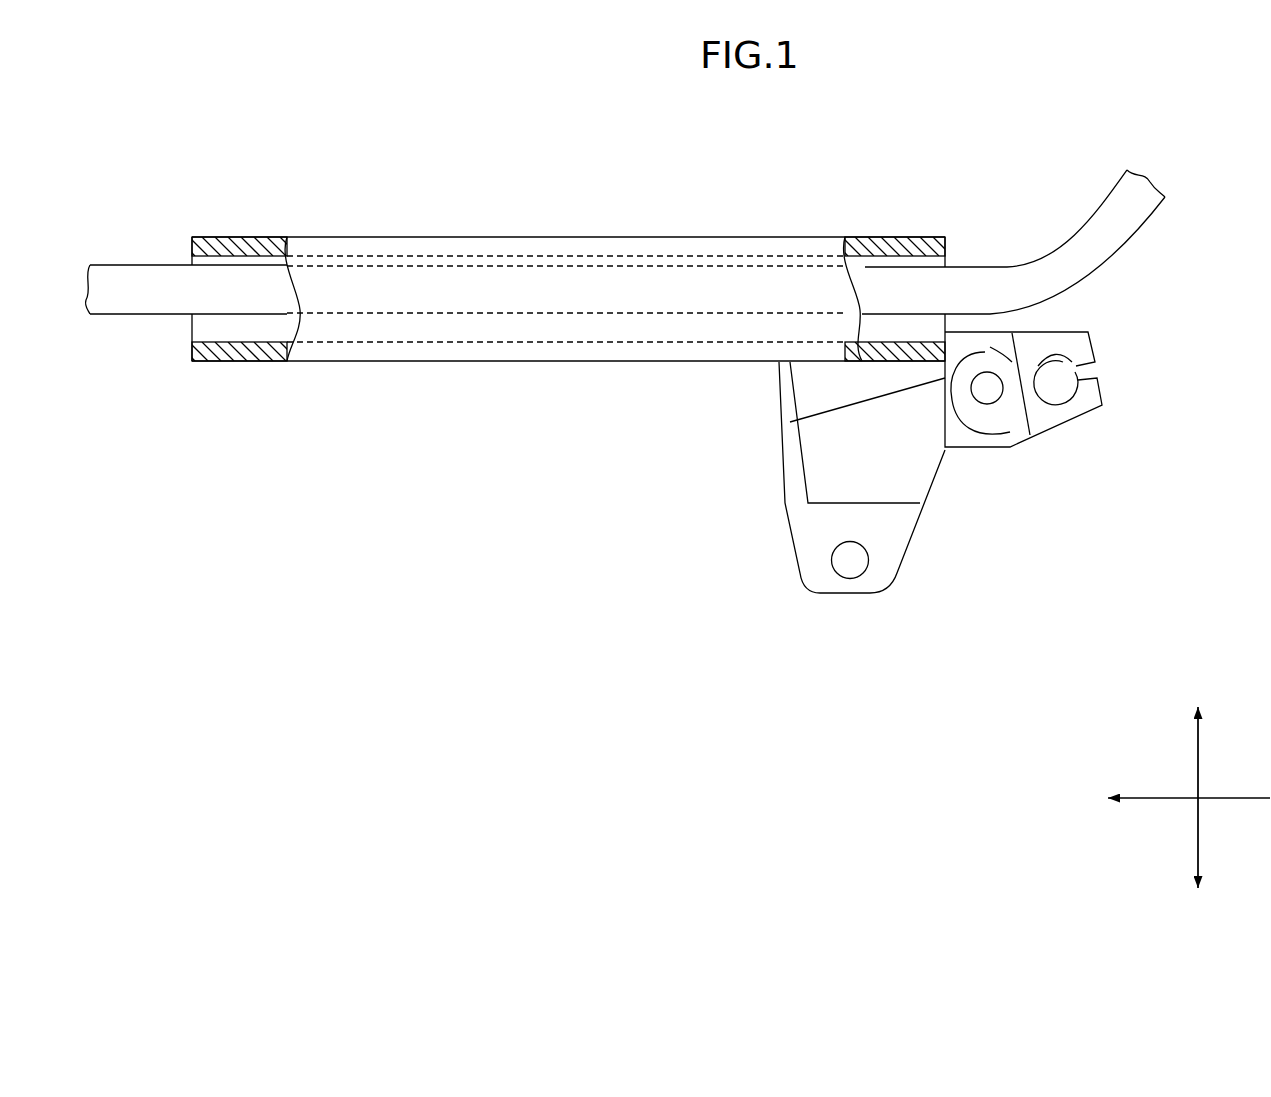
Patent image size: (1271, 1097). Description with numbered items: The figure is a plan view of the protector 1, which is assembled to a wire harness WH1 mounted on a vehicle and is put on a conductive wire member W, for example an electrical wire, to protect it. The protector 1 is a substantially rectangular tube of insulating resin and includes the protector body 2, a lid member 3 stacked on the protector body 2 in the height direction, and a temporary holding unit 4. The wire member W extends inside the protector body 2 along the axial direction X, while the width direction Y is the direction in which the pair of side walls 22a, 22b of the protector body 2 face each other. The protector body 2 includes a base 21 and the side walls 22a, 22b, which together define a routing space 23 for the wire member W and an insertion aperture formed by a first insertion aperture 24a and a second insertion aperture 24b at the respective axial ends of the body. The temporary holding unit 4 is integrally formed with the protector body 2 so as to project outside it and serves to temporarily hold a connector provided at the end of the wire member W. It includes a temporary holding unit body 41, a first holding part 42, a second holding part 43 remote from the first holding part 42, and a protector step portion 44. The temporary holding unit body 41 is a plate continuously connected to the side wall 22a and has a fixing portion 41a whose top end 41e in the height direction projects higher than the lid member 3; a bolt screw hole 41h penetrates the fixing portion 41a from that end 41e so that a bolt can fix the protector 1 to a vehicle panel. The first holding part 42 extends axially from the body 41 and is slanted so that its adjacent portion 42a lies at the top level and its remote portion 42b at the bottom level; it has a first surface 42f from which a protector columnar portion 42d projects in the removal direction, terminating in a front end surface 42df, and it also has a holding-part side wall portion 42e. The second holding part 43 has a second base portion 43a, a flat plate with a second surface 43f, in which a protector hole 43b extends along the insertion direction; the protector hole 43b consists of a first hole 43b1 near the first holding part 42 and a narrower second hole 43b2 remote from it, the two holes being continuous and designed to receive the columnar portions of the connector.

The protector 1 is at (250, 201).
The protector body 2 is at (287, 385).
The lid member 3 is at (348, 328).
The temporary holding unit 4 is at (1192, 640).
The base 21 is at (215, 330).
The side wall 22a is at (405, 362).
The side wall 22b is at (422, 237).
The routing space 23 is at (370, 290).
The first insertion aperture 24a is at (195, 263).
The second insertion aperture 24b is at (918, 257).
The temporary holding unit body 41 is at (910, 552).
The fixing portion 41a is at (812, 543).
The end in the height direction 41e is at (850, 513).
The bolt screw hole 41h is at (858, 546).
The first holding part 42 is at (1002, 466).
The adjacent portion 42a is at (945, 322).
The remote portion 42b is at (1034, 332).
The protector columnar portion 42d is at (992, 345).
The front end surface 42df is at (945, 467).
The holding-part side wall portion 42e is at (975, 412).
The first surface 42f is at (970, 388).
The second holding part 43 is at (1085, 436).
The second base portion 43a is at (1071, 332).
The protector hole 43b is at (1205, 300).
The first hole 43b1 is at (1073, 363).
The second hole 43b2 is at (1098, 379).
The second surface 43f is at (1105, 408).
The protector step portion 44 is at (1034, 412).
The wire member W is at (150, 318).
The wire harness WH1 is at (318, 156).
The axial direction X is at (1242, 800).
The width direction Y is at (1200, 768).